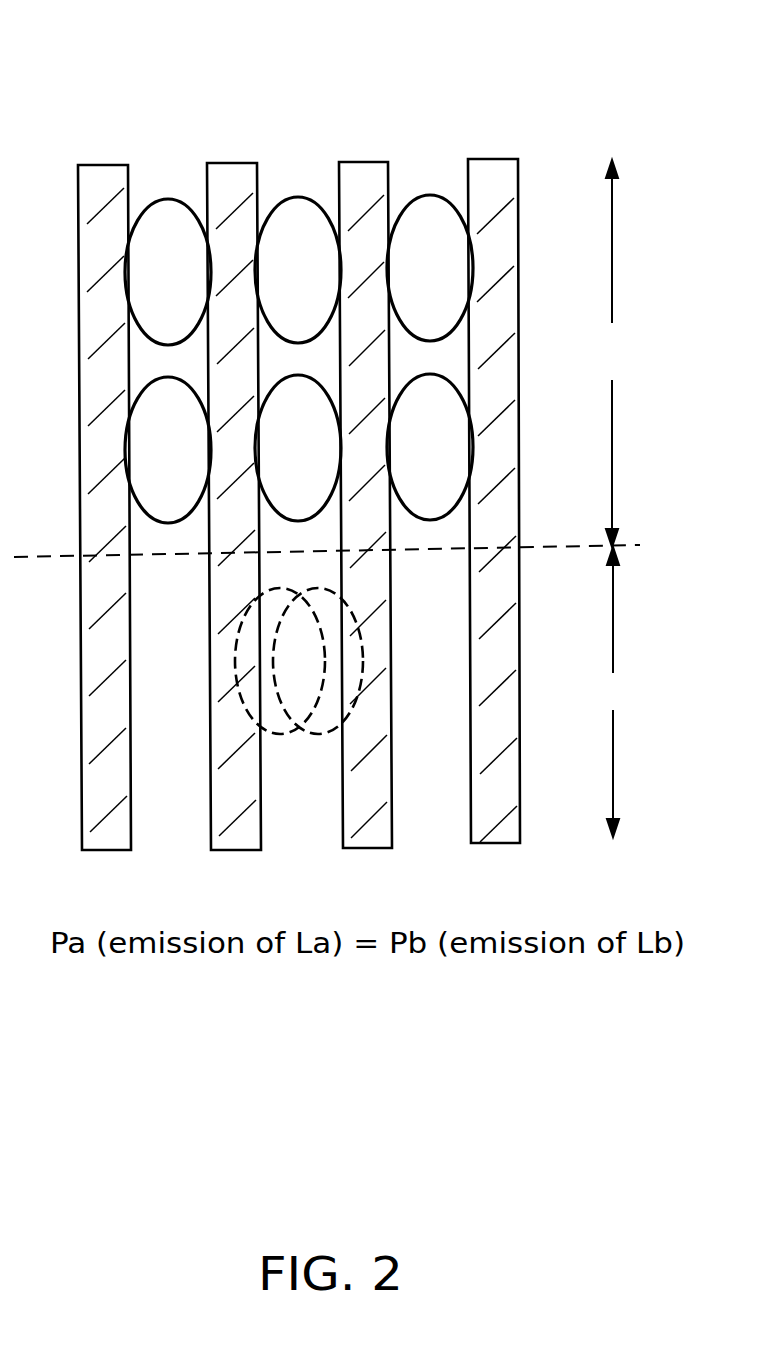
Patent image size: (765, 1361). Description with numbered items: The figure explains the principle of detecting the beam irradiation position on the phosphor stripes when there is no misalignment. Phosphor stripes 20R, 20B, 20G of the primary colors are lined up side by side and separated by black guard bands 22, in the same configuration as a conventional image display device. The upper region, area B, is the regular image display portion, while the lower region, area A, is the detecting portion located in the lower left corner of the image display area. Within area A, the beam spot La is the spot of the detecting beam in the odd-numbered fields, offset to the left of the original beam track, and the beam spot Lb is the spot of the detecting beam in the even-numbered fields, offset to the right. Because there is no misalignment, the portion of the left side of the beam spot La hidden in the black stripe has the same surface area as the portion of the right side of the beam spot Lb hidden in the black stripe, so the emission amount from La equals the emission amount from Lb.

The black guard bands 22 is at (100, 165).
The phosphor stripe 20R is at (167, 185).
The phosphor stripe 20B is at (303, 185).
The phosphor stripe 20G is at (436, 182).
The beam spot La is at (240, 706).
The beam spot Lb is at (353, 698).
The area A is at (613, 692).
The area B is at (612, 353).